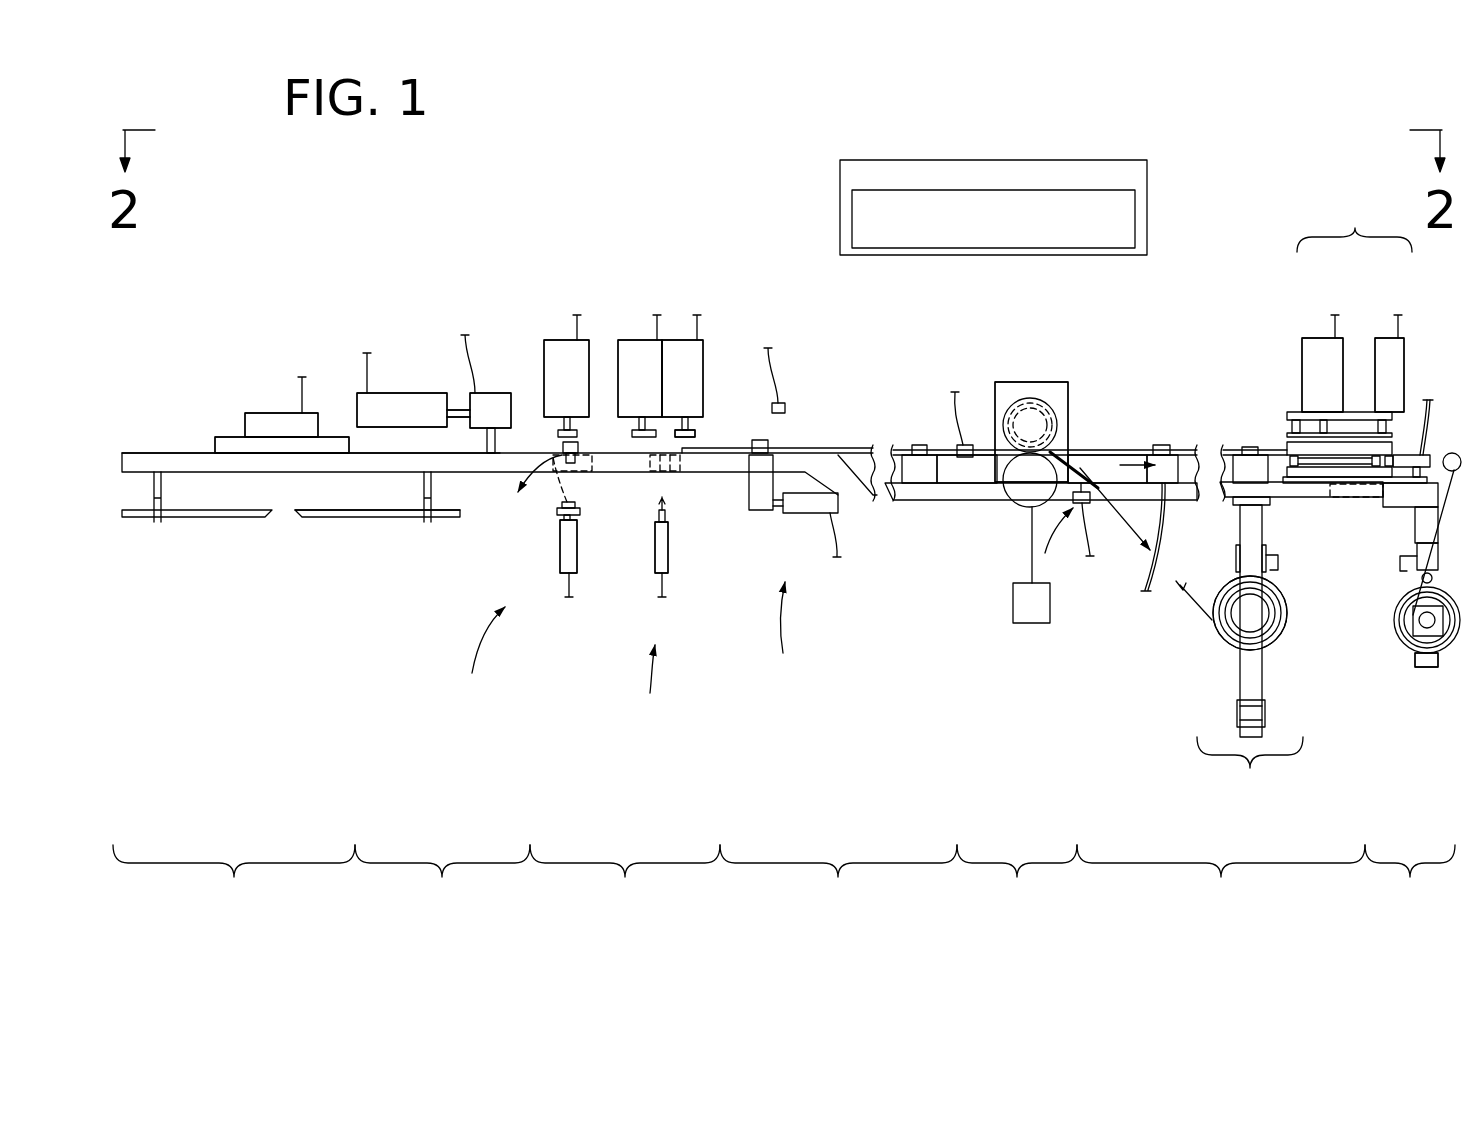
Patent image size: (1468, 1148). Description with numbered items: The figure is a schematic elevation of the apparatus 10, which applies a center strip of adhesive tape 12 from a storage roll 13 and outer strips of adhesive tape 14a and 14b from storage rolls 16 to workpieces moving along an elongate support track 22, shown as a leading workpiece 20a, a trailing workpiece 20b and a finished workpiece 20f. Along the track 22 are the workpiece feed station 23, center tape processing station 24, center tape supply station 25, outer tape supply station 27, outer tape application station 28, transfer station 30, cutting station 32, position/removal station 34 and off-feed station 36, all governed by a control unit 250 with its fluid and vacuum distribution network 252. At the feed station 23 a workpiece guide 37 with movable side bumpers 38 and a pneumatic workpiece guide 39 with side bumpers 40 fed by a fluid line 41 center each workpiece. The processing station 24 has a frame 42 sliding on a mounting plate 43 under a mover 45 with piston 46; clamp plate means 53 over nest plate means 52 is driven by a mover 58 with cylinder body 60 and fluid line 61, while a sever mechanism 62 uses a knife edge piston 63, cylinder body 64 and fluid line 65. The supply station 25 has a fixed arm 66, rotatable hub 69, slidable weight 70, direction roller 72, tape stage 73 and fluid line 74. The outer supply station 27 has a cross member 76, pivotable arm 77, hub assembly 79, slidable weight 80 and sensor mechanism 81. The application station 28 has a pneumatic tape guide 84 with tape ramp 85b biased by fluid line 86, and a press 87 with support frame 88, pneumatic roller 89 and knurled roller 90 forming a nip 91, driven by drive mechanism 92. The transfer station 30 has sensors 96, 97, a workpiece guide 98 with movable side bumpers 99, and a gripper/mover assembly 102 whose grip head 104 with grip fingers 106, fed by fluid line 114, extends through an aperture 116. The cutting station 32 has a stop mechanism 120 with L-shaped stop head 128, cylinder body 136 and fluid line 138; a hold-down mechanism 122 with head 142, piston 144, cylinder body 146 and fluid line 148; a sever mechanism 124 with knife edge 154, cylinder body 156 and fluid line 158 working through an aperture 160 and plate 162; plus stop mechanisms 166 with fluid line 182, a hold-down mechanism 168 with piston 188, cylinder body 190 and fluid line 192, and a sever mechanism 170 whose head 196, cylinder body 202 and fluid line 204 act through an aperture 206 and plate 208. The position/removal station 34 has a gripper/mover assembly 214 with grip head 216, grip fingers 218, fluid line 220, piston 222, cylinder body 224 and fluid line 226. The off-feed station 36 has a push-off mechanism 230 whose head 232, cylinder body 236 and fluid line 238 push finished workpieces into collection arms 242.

The apparatus 10 is at (1178, 162).
The center strip of adhesive tape 12 is at (1405, 590).
The storage roll 13 is at (1420, 630).
The outer strip of adhesive tape 14a is at (1177, 593).
The outer strip of adhesive tape 14b is at (1205, 612).
The storage roll 16 is at (1222, 640).
The leading workpiece 20a is at (857, 447).
The trailing workpiece 20b is at (1227, 448).
The finished workpiece 20f is at (325, 515).
The support track 22 is at (175, 450).
The workpiece feed station 23 is at (1221, 877).
The center tape processing station 24 is at (1354, 221).
The center tape supply station 25 is at (1410, 877).
The outer tape supply station 27 is at (1250, 771).
The outer tape application station 28 is at (1017, 877).
The transfer station 30 is at (838, 877).
The cutting station 32 is at (625, 877).
The position/removal station 34 is at (442, 877).
The off-feed station 36 is at (234, 877).
The workpiece guide 37 is at (1263, 490).
The movable side bumpers 38 is at (1245, 445).
The pneumatic workpiece guide 39 is at (1122, 462).
The side bumpers 40 is at (1162, 445).
The fluid line 41 is at (1140, 572).
The frame 42 is at (1290, 412).
The mounting plate 43 is at (1330, 497).
The mover 45 is at (1380, 516).
The piston 46 is at (1372, 497).
The nest plate means 52 is at (1283, 450).
The clamp plate means 53 is at (1290, 445).
The mover 58 is at (1322, 330).
The cylinder body 60 is at (1312, 340).
The fluid line 61 is at (1336, 322).
The sever mechanism 62 is at (1392, 330).
The knife edge piston 63 is at (1400, 450).
The cylinder body 64 is at (1404, 355).
The fluid line 65 is at (1400, 318).
The fixed arm 66 is at (1432, 668).
The rotatable hub 69 is at (1418, 660).
The slidable weight 70 is at (1400, 574).
The direction roller 72 is at (1450, 455).
The tape stage 73 is at (1422, 440).
The fluid line 74 is at (1429, 402).
The cross member 76 is at (1265, 722).
The pivotable arm 77 is at (1243, 688).
The hub assembly 79 is at (1263, 635).
The slidable weight 80 is at (1237, 555).
The sensor mechanism 81 is at (1280, 568).
The pneumatic tape guide 84 is at (1055, 543).
The tape ramp 85b is at (1060, 451).
The fluid line 86 is at (1085, 540).
The press 87 is at (1042, 366).
The support frame 88 is at (1030, 385).
The pneumatic roller 89 is at (1036, 420).
The knurled roller 90 is at (1020, 507).
The nip 91 is at (1090, 445).
The drive mechanism 92 is at (1018, 625).
The sensor 96 is at (960, 443).
The sensor 97 is at (785, 405).
The workpiece guide 98 is at (918, 480).
The movable side bumpers 99 is at (915, 442).
The gripper/mover assembly 102 is at (795, 633).
The grip head 104 is at (760, 515).
The grip fingers 106 is at (768, 442).
The fluid line 114 is at (835, 560).
The aperture 116 is at (742, 465).
The stop mechanism 120 is at (620, 258).
The hold-down mechanism 122 is at (703, 258).
The sever mechanism 124 is at (656, 686).
The L-shaped stop head 128 is at (646, 434).
The cylinder body 136 is at (648, 345).
The fluid line 138 is at (657, 322).
The head 142 is at (695, 433).
The piston 144 is at (705, 415).
The cylinder body 146 is at (700, 365).
The fluid line 148 is at (697, 322).
The knife edge 154 is at (668, 528).
The cylinder body 156 is at (668, 560).
The fluid line 158 is at (660, 580).
The aperture 160 is at (662, 512).
The plate 162 is at (680, 470).
The stop mechanisms 166 is at (585, 470).
The hold-down mechanism 168 is at (530, 280).
The sever mechanism 170 is at (477, 659).
The fluid line 182 is at (562, 445).
The piston 188 is at (555, 420).
The cylinder body 190 is at (568, 345).
The fluid line 192 is at (576, 322).
The head 196 is at (563, 575).
The cylinder body 202 is at (640, 565).
The fluid line 204 is at (565, 590).
The aperture 206 is at (555, 512).
The plate 208 is at (548, 478).
The gripper/mover assembly 214 is at (375, 320).
The grip head 216 is at (520, 380).
The grip fingers 218 is at (487, 443).
The fluid line 220 is at (462, 372).
The piston 222 is at (447, 400).
The cylinder body 224 is at (440, 395).
The fluid line 226 is at (362, 380).
The push-off mechanism 230 is at (245, 345).
The head 232 is at (240, 430).
The cylinder body 236 is at (280, 400).
The fluid line 238 is at (300, 392).
The collection arms 242 is at (158, 522).
The control unit 250 is at (880, 167).
The fluid and vacuum distribution network 252 is at (860, 238).